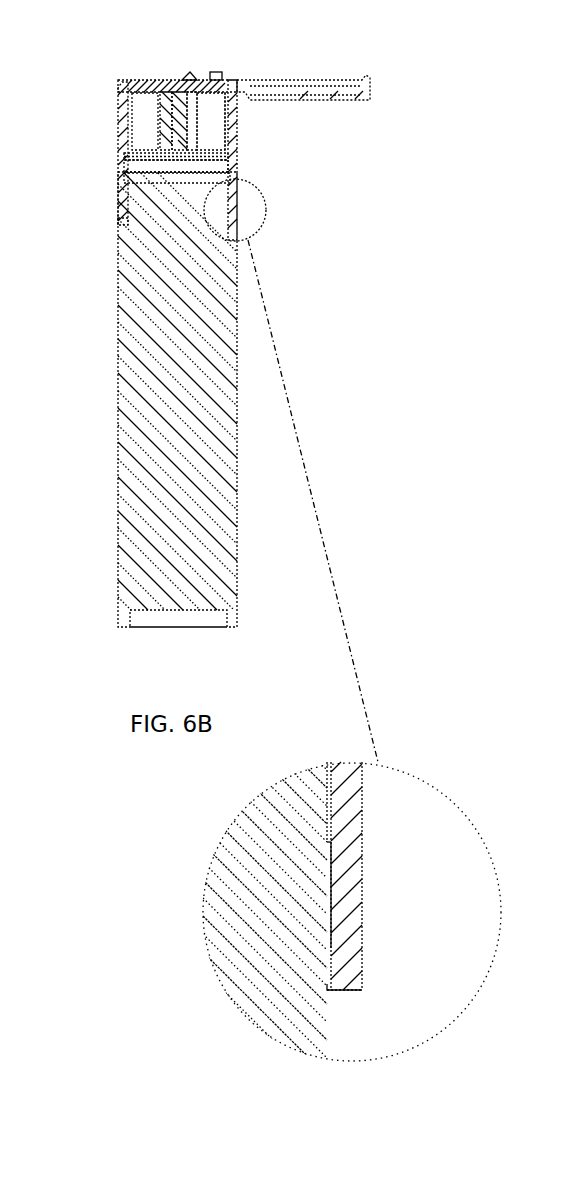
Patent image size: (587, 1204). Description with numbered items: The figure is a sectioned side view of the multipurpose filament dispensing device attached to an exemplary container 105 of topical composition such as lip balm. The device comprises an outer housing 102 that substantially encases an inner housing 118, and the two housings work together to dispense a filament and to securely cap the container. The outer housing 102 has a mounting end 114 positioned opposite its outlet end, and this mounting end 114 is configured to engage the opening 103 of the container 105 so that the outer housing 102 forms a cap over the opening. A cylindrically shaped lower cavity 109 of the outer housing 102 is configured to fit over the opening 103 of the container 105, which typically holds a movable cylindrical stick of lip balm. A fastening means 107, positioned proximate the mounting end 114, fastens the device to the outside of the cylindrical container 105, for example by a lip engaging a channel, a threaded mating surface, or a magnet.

The outer housing 102 is at (118, 137).
The opening 103 is at (186, 181).
The container 105 is at (150, 397).
The fastening means 107 is at (228, 207).
The lower cavity 109 is at (205, 165).
The mounting end 114 is at (118, 222).
The inner housing 118 is at (138, 85).